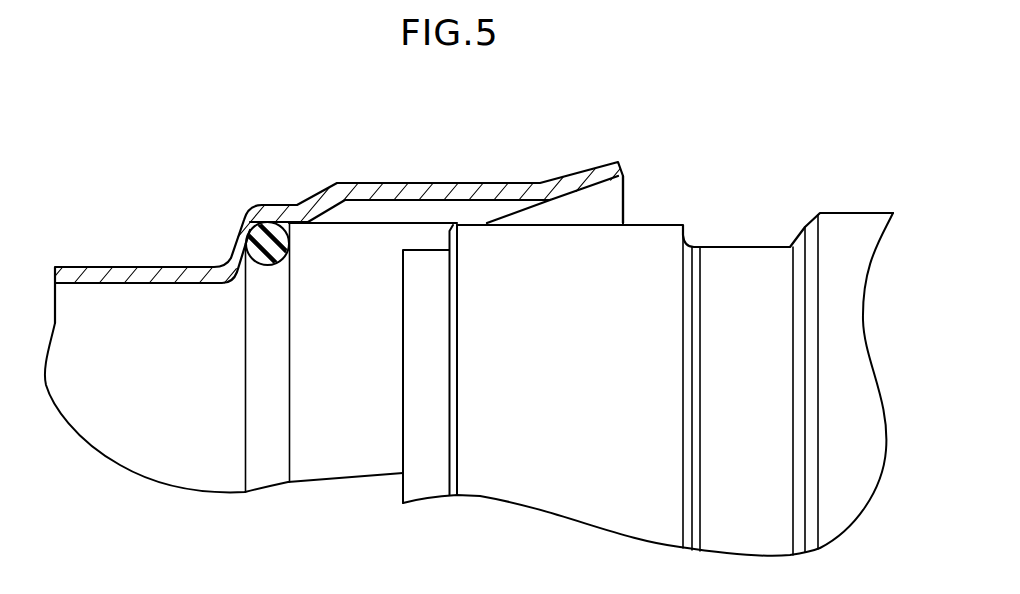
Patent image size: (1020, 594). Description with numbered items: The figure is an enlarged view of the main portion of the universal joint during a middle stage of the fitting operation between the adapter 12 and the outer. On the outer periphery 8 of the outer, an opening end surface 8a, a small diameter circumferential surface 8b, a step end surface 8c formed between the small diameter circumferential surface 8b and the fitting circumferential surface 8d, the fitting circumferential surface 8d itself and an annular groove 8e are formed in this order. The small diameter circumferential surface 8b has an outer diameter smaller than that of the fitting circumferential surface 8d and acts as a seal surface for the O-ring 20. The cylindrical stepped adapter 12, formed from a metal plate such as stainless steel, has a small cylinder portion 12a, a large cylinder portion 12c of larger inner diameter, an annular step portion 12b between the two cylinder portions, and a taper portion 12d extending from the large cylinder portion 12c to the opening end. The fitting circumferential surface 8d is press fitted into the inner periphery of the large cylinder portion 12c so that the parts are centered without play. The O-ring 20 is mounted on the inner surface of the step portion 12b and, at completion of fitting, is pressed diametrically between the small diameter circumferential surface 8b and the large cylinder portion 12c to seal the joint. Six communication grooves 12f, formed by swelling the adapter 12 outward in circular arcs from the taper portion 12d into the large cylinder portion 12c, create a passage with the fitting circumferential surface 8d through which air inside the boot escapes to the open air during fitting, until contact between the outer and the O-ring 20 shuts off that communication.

The outer periphery of the outer 8 is at (708, 139).
The opening end surface 8a is at (402, 413).
The small diameter circumferential surface 8b is at (427, 483).
The step end surface 8c is at (448, 240).
The fitting circumferential surface 8d is at (647, 224).
The annular groove 8e is at (777, 243).
The adapter 12 is at (159, 214).
The small cylinder portion 12a is at (113, 270).
The annular step portion 12b is at (236, 238).
The large cylinder portion 12c is at (278, 206).
The taper portion 12d is at (592, 173).
The communication groove 12f is at (437, 207).
The O-ring 20 is at (272, 256).